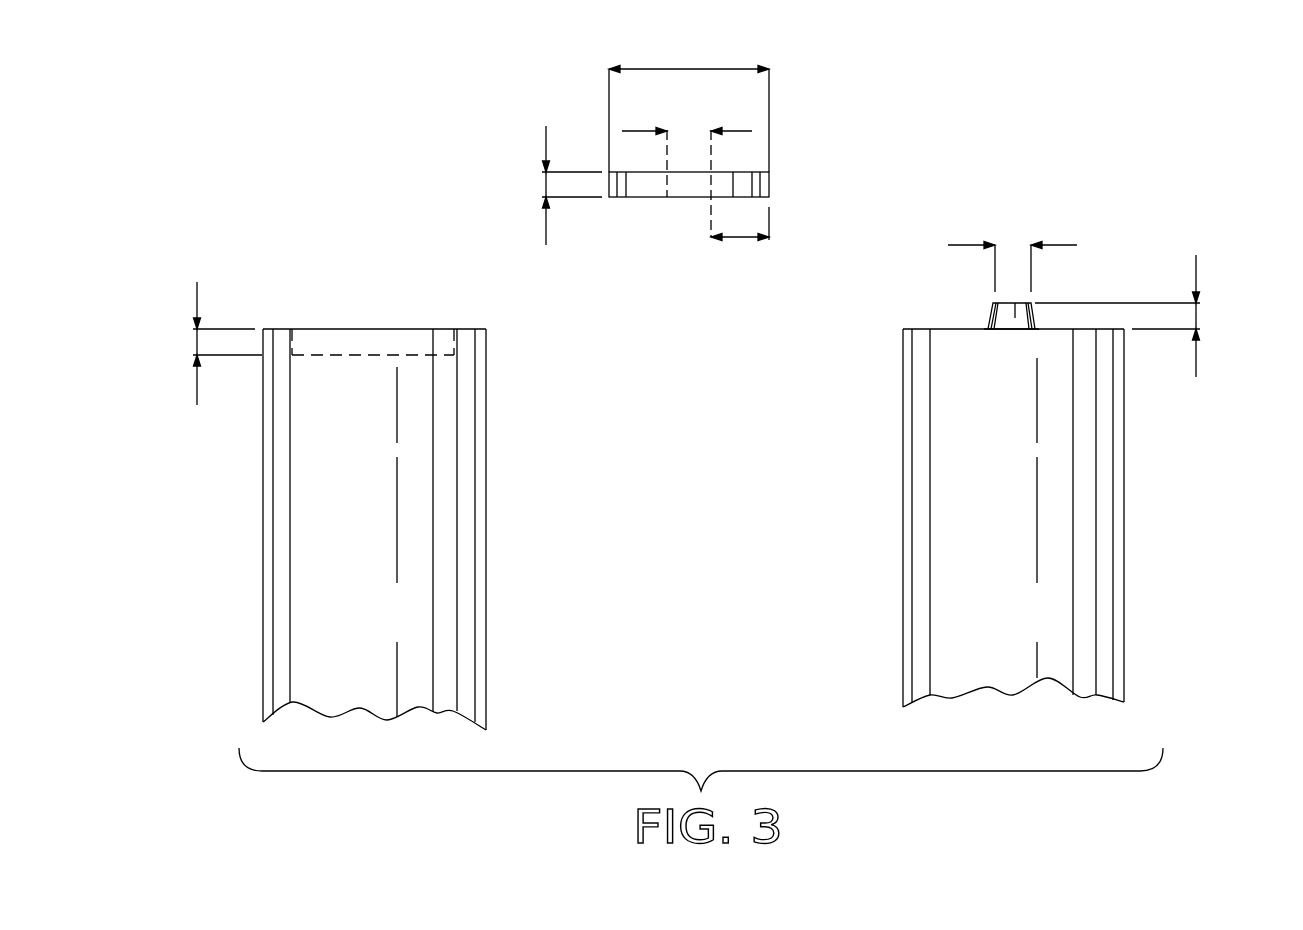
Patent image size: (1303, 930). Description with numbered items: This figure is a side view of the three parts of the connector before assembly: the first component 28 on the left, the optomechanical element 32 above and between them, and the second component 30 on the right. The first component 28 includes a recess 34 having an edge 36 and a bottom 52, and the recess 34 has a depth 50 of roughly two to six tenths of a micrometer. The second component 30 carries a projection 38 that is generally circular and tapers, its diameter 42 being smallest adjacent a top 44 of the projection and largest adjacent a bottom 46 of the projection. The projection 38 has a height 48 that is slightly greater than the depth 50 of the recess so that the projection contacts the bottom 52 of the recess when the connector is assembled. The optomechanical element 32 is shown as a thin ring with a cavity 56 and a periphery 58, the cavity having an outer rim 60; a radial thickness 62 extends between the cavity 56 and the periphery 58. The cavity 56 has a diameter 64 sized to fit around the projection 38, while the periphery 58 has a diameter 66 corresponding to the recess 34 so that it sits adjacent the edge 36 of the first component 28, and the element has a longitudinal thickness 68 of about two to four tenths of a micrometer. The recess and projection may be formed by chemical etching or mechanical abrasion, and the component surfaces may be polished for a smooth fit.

The first component 28 is at (263, 552).
The second component 30 is at (1124, 492).
The optomechanical element 32 is at (787, 157).
The recess 34 is at (376, 287).
The edge 36 is at (293, 352).
The projection 38 is at (993, 308).
The diameter 42 is at (963, 243).
The top 44 is at (1032, 302).
The bottom 46 is at (988, 327).
The height 48 is at (1196, 268).
The depth 50 is at (197, 383).
The bottom 52 is at (377, 352).
The cavity 56 is at (707, 183).
The periphery 58 is at (770, 184).
The outer rim 60 is at (667, 197).
The radial thickness 62 is at (738, 240).
The diameter 64 is at (748, 130).
The diameter 66 is at (688, 69).
The longitudinal thickness 68 is at (545, 135).